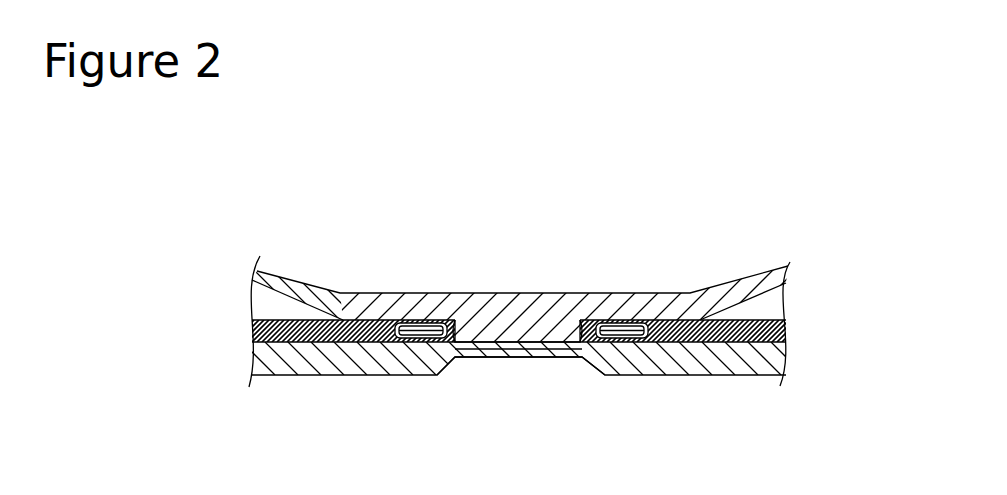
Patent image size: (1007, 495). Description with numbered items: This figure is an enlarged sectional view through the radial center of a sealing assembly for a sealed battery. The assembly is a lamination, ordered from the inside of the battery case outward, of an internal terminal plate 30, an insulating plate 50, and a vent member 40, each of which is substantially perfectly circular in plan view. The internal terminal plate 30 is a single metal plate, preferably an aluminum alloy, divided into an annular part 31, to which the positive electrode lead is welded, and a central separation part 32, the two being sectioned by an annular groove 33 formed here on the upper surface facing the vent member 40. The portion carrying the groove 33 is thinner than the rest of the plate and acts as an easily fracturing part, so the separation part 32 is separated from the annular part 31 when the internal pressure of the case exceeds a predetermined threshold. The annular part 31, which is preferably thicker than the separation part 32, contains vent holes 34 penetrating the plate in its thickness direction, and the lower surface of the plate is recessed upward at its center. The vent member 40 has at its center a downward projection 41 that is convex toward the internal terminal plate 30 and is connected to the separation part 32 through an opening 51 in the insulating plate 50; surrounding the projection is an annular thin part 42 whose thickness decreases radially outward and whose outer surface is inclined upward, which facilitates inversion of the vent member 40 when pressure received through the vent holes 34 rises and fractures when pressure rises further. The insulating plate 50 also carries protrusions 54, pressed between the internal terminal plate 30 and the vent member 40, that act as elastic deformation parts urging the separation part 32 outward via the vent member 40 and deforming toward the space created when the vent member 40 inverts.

The internal terminal plate 30 is at (511, 399).
The annular part 31 is at (358, 375).
The separation part 32 is at (530, 352).
The annular groove 33 is at (450, 322).
The vent holes 34 is at (520, 325).
The vent member 40 is at (548, 273).
The downward projection 41 is at (489, 352).
The thin part 42 is at (767, 277).
The insulating plate 50 is at (291, 321).
The opening 51 is at (579, 320).
The protrusions 54 is at (427, 322).